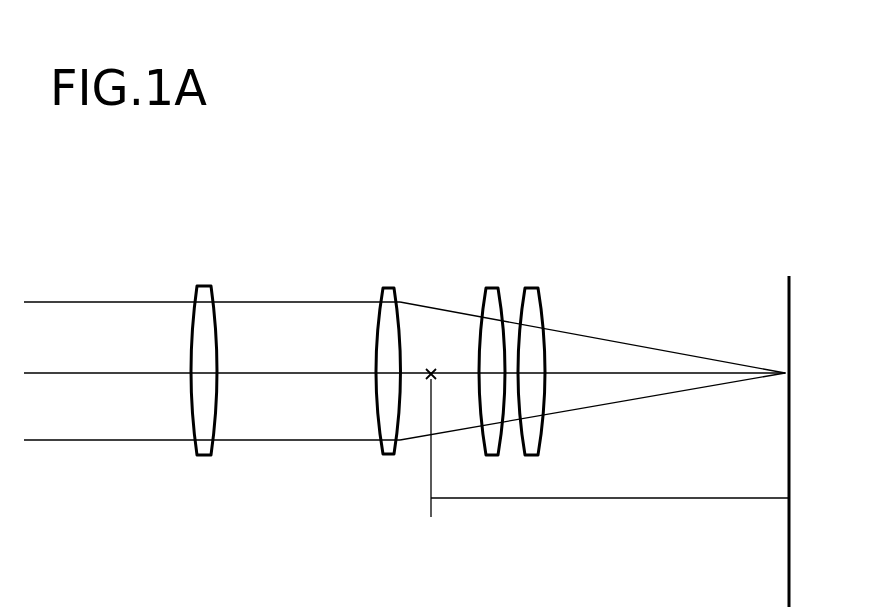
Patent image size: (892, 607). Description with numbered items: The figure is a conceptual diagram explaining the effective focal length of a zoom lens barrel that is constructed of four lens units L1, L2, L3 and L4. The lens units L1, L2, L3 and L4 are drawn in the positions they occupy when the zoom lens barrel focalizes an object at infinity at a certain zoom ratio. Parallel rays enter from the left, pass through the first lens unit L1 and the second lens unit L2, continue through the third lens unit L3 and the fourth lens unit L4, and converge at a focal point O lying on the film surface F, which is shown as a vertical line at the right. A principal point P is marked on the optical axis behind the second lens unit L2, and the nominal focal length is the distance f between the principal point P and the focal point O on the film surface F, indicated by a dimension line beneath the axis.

The lens unit L1 is at (203, 335).
The lens unit L2 is at (390, 334).
The lens unit L3 is at (493, 335).
The lens unit L4 is at (529, 335).
The film surface F is at (790, 411).
The principal point P is at (442, 443).
The focal point O is at (775, 398).
The nominal focal length f is at (609, 515).